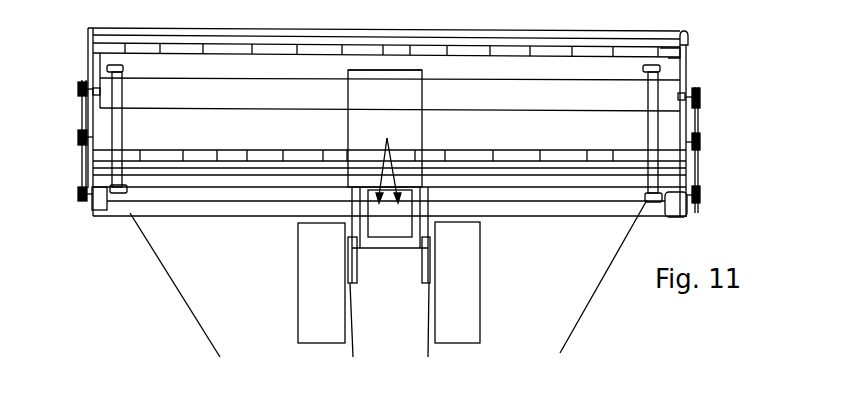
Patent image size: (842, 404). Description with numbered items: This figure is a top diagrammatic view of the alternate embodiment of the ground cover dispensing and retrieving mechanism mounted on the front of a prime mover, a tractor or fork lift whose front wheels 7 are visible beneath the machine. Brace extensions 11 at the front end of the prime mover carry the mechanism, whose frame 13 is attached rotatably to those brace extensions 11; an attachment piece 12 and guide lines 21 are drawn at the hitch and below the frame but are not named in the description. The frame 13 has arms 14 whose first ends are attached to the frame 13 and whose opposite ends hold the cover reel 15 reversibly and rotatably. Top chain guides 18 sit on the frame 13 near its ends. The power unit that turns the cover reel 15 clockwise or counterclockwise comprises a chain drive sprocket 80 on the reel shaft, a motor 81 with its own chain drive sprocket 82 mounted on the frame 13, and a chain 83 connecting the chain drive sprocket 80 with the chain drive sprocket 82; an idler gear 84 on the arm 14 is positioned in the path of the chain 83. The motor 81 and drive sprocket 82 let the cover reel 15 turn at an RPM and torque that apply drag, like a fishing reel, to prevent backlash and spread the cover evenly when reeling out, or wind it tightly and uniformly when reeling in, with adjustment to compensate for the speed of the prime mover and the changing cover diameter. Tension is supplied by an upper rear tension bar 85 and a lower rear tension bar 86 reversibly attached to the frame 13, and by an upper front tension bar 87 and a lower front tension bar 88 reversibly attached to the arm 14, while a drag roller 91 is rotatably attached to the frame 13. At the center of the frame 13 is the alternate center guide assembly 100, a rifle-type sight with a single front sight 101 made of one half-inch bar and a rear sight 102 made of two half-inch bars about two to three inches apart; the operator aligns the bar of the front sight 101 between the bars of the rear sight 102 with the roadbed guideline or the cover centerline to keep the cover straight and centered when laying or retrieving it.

The front wheels 7 is at (303, 272).
The brace extensions 11 is at (390, 243).
The hitch arm 12 is at (420, 282).
The frame 13 is at (195, 181).
The arms 14 is at (88, 68).
The cover reel 15 is at (168, 101).
The top chain guides 18 is at (122, 128).
The guide line 21 is at (182, 293).
The chain drive sprocket 80 is at (700, 97).
The motor 81 is at (98, 205).
The chain drive sprocket 82 is at (700, 197).
The chain 83 is at (697, 167).
The idler gear 84 is at (700, 143).
The upper rear tension bar 85 is at (560, 158).
The lower rear tension bar 86 is at (266, 170).
The upper front tension bar 87 is at (672, 57).
The lower front tension bar 88 is at (670, 40).
The drag roller 91 is at (550, 208).
The center guide assembly 100 is at (425, 98).
The front sight 101 is at (383, 68).
The rear sight 102 is at (388, 161).